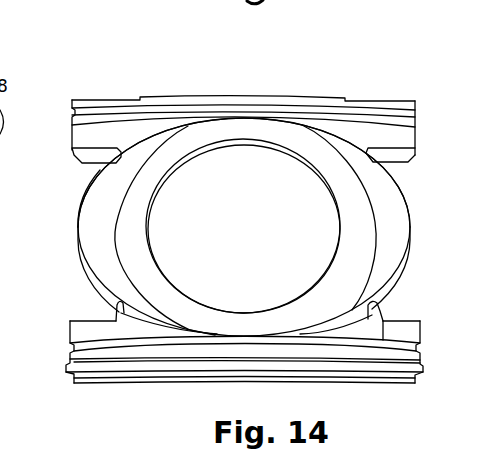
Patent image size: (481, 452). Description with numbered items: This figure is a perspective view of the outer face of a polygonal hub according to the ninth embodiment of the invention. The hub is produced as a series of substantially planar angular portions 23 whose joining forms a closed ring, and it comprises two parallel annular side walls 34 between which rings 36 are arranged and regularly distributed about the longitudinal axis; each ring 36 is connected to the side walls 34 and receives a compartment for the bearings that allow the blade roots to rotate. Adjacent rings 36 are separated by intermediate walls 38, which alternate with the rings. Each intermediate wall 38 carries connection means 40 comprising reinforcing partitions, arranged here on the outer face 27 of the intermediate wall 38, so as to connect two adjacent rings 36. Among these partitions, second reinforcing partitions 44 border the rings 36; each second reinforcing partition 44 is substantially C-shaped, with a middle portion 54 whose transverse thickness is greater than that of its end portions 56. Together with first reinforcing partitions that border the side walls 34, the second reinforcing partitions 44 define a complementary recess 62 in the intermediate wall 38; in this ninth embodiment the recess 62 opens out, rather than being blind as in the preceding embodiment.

The angular portion 23 is at (122, 81).
The annular side wall 34 is at (297, 95).
The connection means 40 is at (100, 135).
The intermediate wall 38 is at (403, 137).
The ring 36 is at (207, 152).
The end portion 56 is at (316, 150).
The second reinforcing partition 44 is at (350, 240).
The middle portion 54 is at (103, 238).
The outer face 27 is at (357, 324).
The recess 62 is at (0, 203).